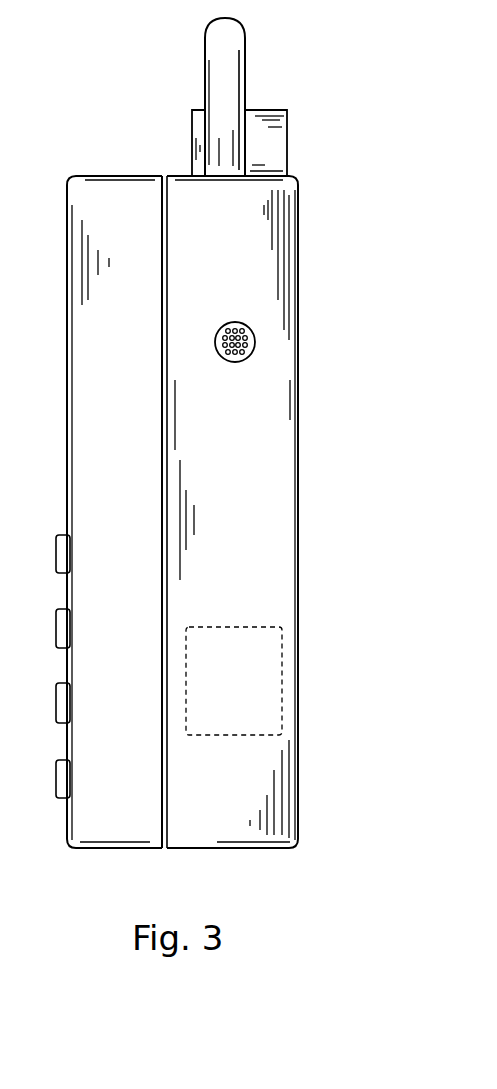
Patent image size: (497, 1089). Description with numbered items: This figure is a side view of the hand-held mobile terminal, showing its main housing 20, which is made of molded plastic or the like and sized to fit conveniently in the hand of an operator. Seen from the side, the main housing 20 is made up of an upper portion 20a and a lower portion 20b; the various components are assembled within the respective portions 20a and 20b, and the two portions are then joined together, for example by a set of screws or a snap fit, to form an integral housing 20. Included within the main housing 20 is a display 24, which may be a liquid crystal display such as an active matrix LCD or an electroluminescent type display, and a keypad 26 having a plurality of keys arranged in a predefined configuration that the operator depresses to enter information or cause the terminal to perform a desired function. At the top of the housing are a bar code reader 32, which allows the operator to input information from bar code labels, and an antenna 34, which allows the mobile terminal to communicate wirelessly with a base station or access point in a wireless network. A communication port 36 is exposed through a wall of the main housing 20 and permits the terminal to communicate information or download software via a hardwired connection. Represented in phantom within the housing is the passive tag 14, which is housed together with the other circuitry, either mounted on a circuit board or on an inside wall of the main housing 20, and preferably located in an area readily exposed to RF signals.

The passive tag 14 is at (242, 626).
The main housing 20 is at (181, 547).
The upper portion 20a is at (133, 848).
The lower portion 20b is at (232, 531).
The display 24 is at (157, 547).
The keypad 26 is at (38, 700).
The bar code reader 32 is at (268, 148).
The antenna 34 is at (232, 63).
The communication port 36 is at (255, 335).